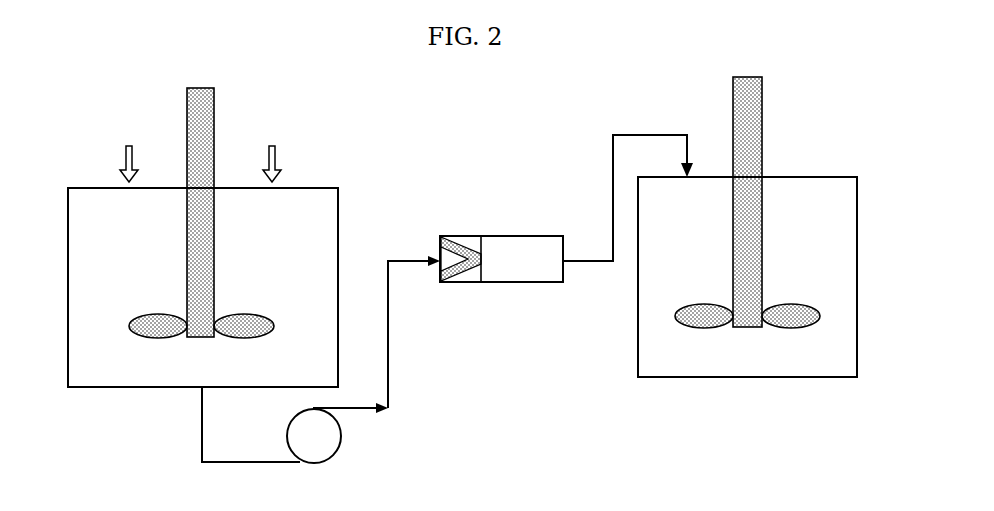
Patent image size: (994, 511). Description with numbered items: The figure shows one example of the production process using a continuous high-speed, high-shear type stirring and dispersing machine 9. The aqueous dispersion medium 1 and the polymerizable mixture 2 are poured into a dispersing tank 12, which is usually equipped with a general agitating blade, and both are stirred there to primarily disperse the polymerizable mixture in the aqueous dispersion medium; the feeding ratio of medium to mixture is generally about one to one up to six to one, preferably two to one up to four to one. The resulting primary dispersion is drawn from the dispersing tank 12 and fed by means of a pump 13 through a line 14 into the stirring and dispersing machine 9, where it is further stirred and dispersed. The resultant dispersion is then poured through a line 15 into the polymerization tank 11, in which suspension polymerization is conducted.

The aqueous dispersion medium 1 is at (129, 150).
The polymerizable mixture 2 is at (272, 150).
The continuous high-speed, high-shear type stirring and dispersing machine 9 is at (512, 283).
The polymerization tank 11 is at (758, 377).
The dispersing tank 12 is at (338, 224).
The pump 13 is at (341, 436).
The line 14 is at (388, 333).
The line 15 is at (613, 163).